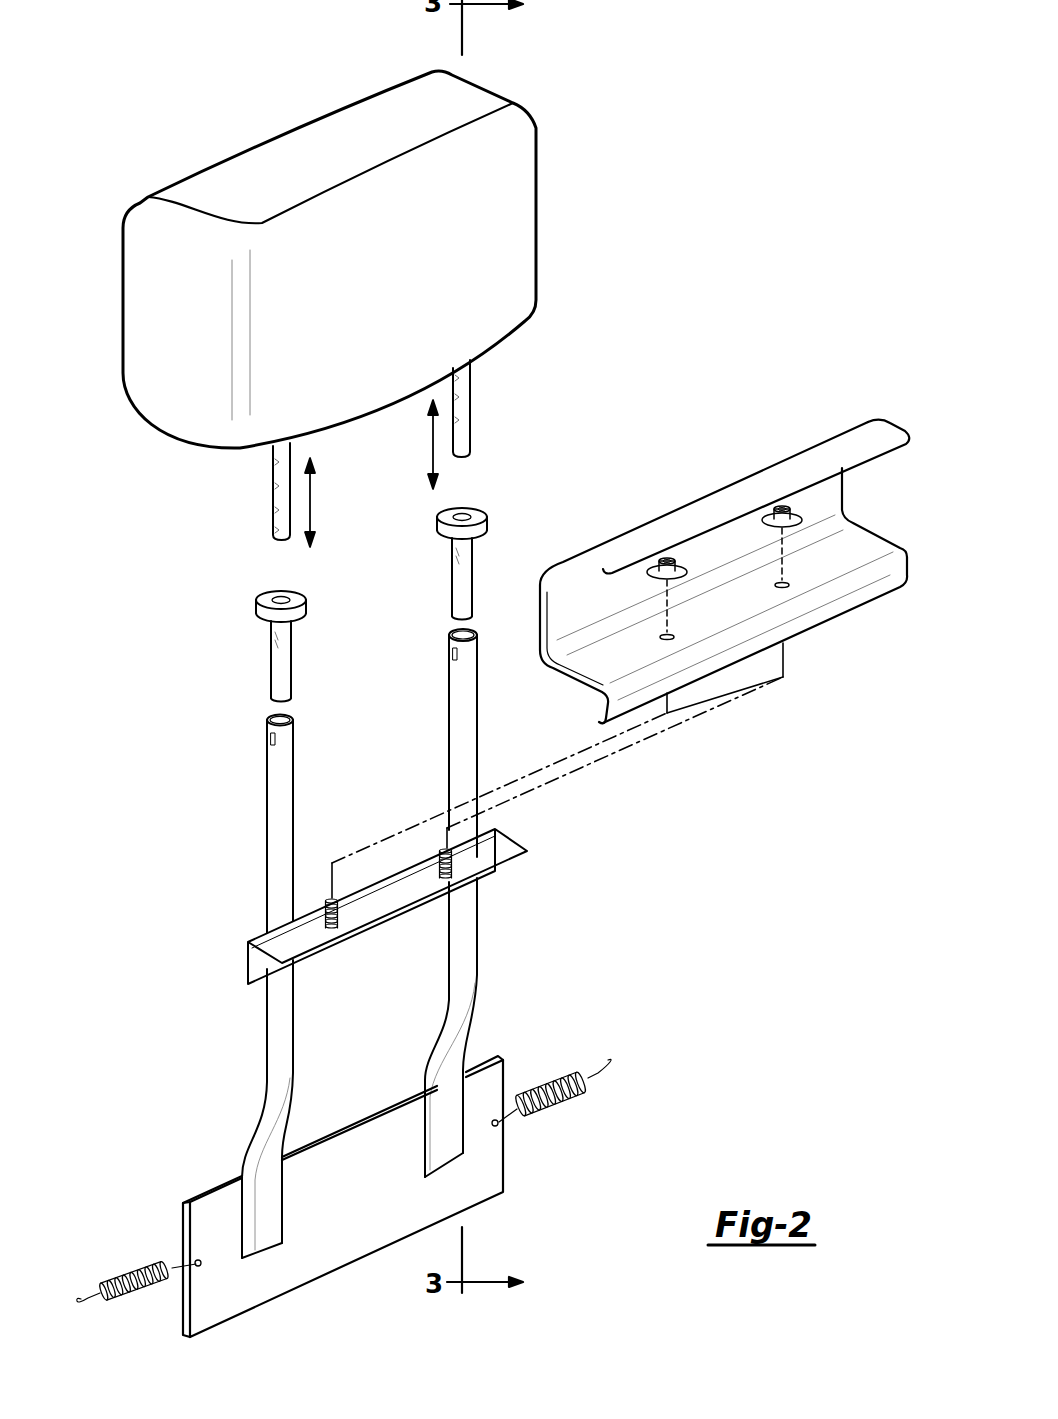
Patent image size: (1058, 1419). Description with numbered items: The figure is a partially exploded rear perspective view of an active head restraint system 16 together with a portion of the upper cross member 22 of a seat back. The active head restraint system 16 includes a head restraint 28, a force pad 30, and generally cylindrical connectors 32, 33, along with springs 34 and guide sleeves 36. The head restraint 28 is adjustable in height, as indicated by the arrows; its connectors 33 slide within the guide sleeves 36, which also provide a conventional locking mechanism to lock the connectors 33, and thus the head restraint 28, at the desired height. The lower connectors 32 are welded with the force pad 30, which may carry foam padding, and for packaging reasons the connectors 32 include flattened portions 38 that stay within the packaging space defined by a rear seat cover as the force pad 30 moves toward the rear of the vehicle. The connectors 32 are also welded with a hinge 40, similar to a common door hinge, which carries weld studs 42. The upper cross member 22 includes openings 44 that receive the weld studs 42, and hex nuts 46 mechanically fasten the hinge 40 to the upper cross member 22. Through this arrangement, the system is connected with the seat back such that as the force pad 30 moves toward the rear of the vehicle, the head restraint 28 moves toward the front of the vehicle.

The active head restraint system 16 is at (170, 740).
The upper cross member 22 is at (797, 460).
The head restraint 28 is at (182, 417).
The force pad 30 is at (307, 1255).
The connectors 32 is at (470, 745).
The connectors 33 is at (277, 530).
The springs 34 is at (600, 1068).
The guide sleeves 36 is at (463, 563).
The flattened portions 38 is at (455, 1110).
The hinge 40 is at (248, 973).
The weld studs 42 is at (330, 898).
The openings 44 is at (663, 637).
The hex nuts 46 is at (650, 578).